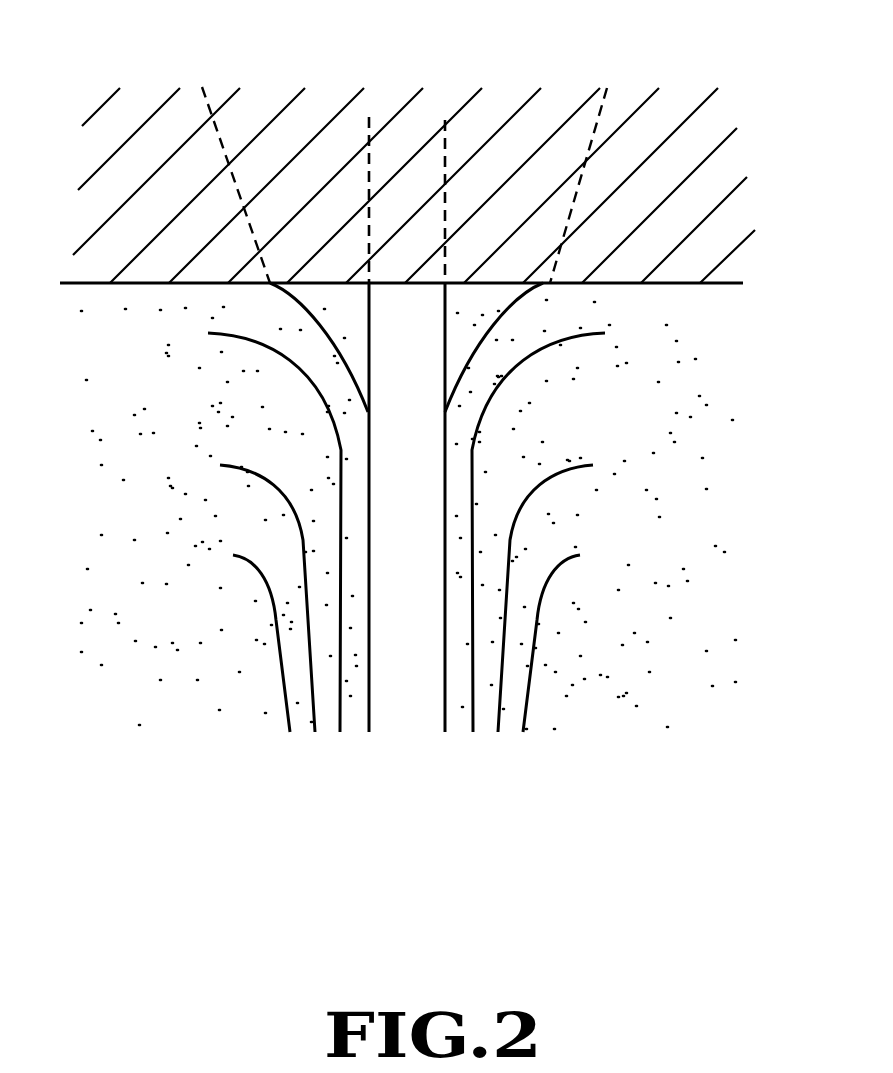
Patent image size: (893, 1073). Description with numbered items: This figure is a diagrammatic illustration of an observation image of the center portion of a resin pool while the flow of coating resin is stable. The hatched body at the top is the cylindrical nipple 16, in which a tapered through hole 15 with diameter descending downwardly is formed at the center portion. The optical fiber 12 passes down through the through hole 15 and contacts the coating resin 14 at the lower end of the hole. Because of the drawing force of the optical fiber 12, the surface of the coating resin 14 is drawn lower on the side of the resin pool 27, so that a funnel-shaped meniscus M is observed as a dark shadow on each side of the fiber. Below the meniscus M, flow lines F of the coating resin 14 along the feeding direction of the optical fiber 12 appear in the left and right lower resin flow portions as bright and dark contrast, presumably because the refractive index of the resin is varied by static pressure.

The optical fiber 12 is at (414, 305).
The coating resin 14 is at (593, 437).
The tapered through hole 15 is at (228, 150).
The cylindrical nipple 16 is at (680, 146).
The resin pool 27 is at (148, 415).
The meniscus M is at (326, 298).
The flow lines F is at (510, 378).